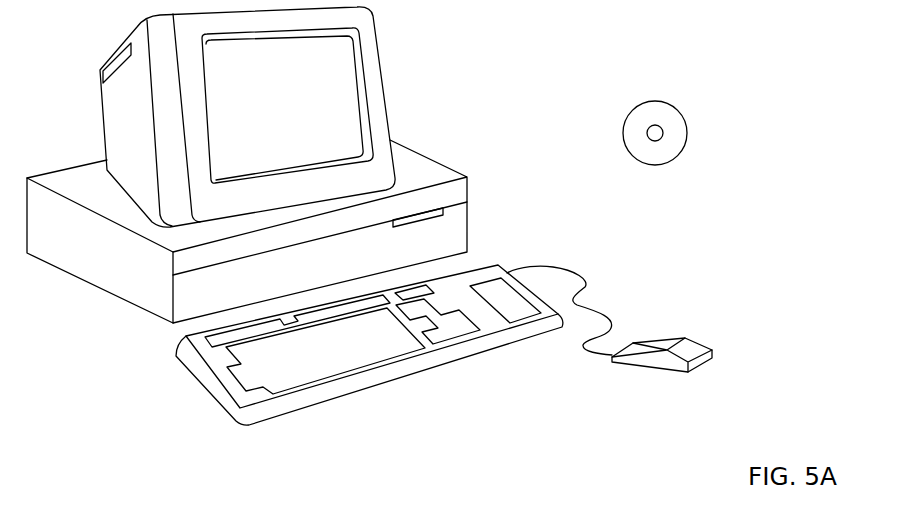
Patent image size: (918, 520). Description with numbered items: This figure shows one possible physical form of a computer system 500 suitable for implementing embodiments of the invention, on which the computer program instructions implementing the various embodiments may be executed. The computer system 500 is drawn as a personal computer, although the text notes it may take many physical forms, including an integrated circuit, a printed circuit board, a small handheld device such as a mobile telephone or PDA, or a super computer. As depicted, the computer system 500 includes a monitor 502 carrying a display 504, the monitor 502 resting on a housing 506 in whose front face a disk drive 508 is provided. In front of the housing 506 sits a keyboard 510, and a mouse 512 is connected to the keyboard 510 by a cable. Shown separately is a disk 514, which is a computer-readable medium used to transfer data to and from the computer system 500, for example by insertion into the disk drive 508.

The computer system 500 is at (748, 20).
The monitor 502 is at (388, 115).
The display 504 is at (349, 68).
The housing 506 is at (137, 309).
The disk drive 508 is at (445, 210).
The keyboard 510 is at (360, 383).
The mouse 512 is at (703, 338).
The disk 514 is at (670, 104).